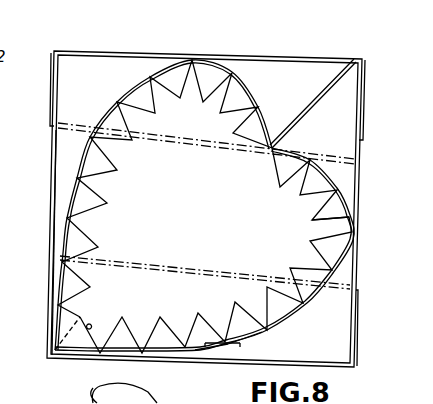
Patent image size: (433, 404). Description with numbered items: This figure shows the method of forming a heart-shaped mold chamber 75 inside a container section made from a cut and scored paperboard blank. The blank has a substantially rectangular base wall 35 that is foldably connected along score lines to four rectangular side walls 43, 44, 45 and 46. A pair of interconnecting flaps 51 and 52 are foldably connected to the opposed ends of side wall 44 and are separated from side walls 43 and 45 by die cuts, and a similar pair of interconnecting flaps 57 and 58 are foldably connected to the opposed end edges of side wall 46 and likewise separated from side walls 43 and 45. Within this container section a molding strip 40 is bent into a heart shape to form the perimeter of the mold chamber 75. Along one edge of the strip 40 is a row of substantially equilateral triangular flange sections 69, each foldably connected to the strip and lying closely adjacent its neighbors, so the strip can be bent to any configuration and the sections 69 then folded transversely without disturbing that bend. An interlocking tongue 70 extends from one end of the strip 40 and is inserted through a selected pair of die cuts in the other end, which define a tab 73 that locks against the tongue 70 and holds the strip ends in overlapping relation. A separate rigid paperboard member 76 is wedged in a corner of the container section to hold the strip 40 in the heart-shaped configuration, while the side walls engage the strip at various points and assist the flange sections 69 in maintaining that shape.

The base portion or wall 35 is at (192, 250).
The molding strip 40 is at (341, 284).
The side wall 43 is at (53, 220).
The side wall 44 is at (134, 51).
The side wall 45 is at (356, 167).
The side wall 46 is at (199, 356).
The interconnecting flap 51 is at (53, 93).
The interconnecting flap 52 is at (365, 95).
The interconnecting flap 57 is at (47, 338).
The interconnecting flap 58 is at (362, 335).
The triangular flange section 69 is at (332, 210).
The interlocking tongue 70 is at (234, 352).
The tab 73 is at (197, 353).
The heart-shaped mold chamber 75 is at (300, 232).
The rigid paperboard member 76 is at (322, 90).